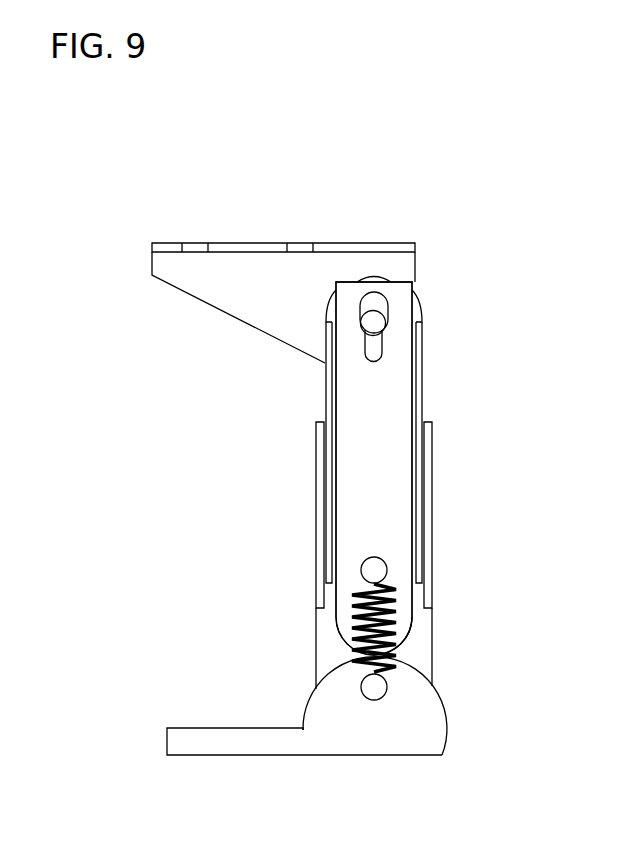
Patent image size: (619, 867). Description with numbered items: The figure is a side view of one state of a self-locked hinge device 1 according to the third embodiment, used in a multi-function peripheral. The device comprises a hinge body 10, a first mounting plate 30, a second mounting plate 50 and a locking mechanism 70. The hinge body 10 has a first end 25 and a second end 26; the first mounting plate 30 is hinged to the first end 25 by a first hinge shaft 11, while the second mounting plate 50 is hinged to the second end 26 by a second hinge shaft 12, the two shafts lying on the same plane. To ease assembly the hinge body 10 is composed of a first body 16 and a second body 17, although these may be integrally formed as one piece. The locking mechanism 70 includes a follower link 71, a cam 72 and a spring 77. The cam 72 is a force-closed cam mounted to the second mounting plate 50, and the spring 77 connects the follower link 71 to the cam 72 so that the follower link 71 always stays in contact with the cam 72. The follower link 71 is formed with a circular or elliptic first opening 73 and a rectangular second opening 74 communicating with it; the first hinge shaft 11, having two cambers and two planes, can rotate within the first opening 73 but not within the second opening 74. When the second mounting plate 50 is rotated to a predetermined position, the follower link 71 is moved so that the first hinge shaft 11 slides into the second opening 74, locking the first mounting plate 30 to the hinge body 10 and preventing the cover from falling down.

The self-locked hinge device 1 is at (338, 114).
The hinge body 10 is at (560, 392).
The first hinge shaft 11 is at (373, 325).
The second hinge shaft 12 is at (372, 687).
The first body 16 is at (418, 375).
The second body 17 is at (425, 493).
The first end 25 is at (417, 312).
The second end 26 is at (400, 636).
The first mounting plate 30 is at (236, 258).
The second mounting plate 50 is at (221, 755).
The locking mechanism 70 is at (403, 267).
The follower link 71 is at (397, 292).
The cam 72 is at (443, 698).
The first opening 73 is at (378, 302).
The second opening 74 is at (368, 350).
The spring 77 is at (360, 636).